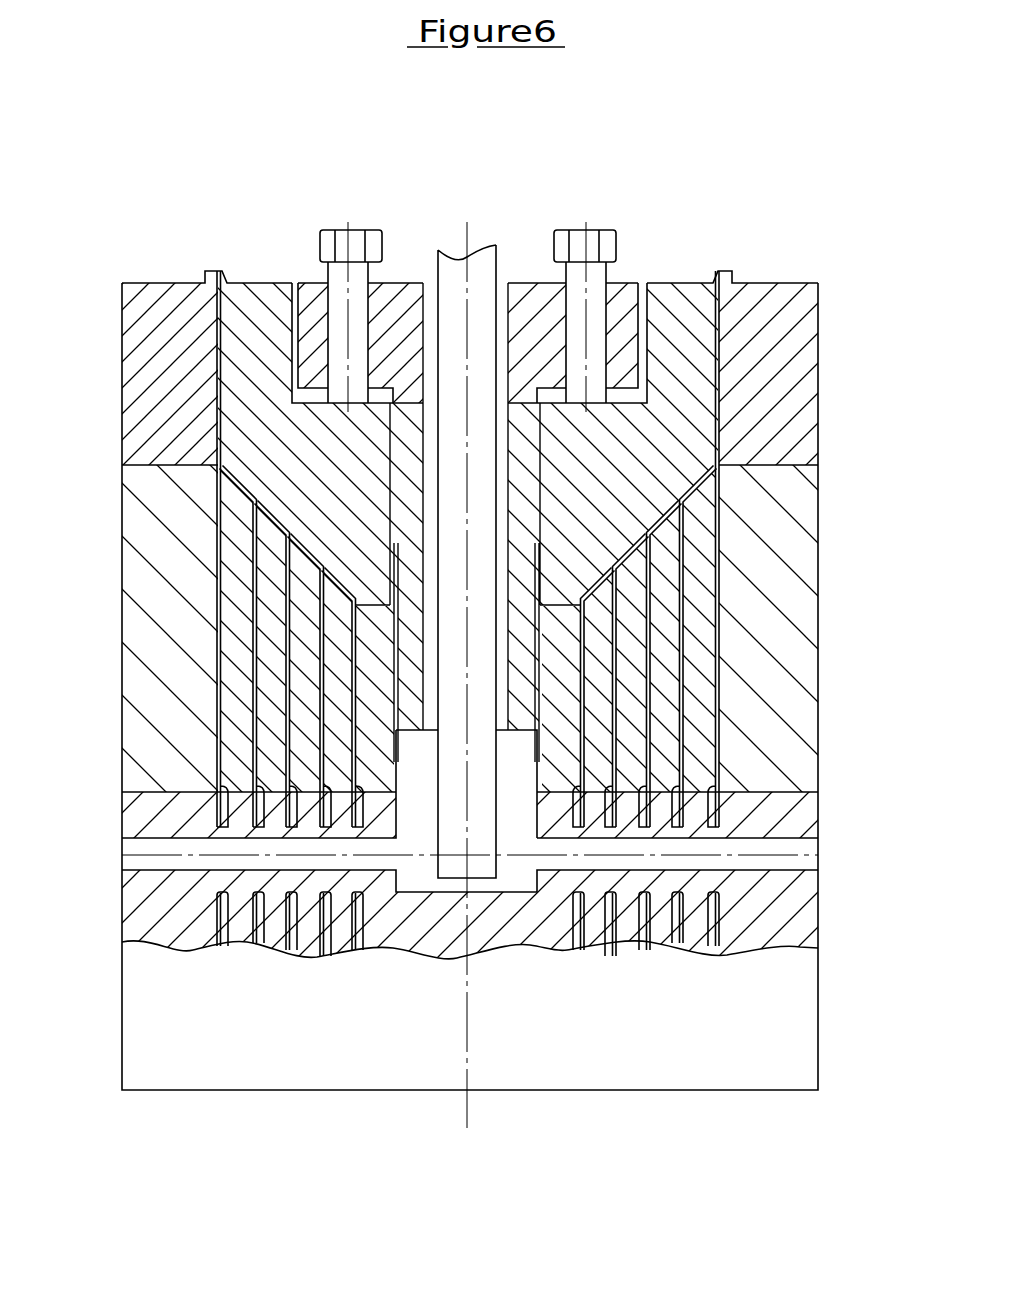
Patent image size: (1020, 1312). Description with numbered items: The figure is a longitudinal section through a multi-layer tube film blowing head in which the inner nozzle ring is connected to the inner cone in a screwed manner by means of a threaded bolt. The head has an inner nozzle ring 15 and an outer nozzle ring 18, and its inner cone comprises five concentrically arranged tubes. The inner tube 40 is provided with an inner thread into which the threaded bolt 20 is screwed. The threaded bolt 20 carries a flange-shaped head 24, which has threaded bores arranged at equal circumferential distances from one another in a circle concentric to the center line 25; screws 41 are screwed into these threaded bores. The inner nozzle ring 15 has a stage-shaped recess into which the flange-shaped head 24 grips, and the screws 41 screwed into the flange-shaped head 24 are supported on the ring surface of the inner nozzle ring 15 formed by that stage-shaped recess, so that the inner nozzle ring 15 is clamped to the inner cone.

The inner nozzle ring 15 is at (693, 451).
The outer nozzle ring 18 is at (812, 353).
The threaded bolt 20 is at (410, 578).
The flange-shaped head 24 is at (625, 308).
The center line 25 is at (470, 238).
The inner tube 40 is at (560, 649).
The screws 41 is at (322, 260).